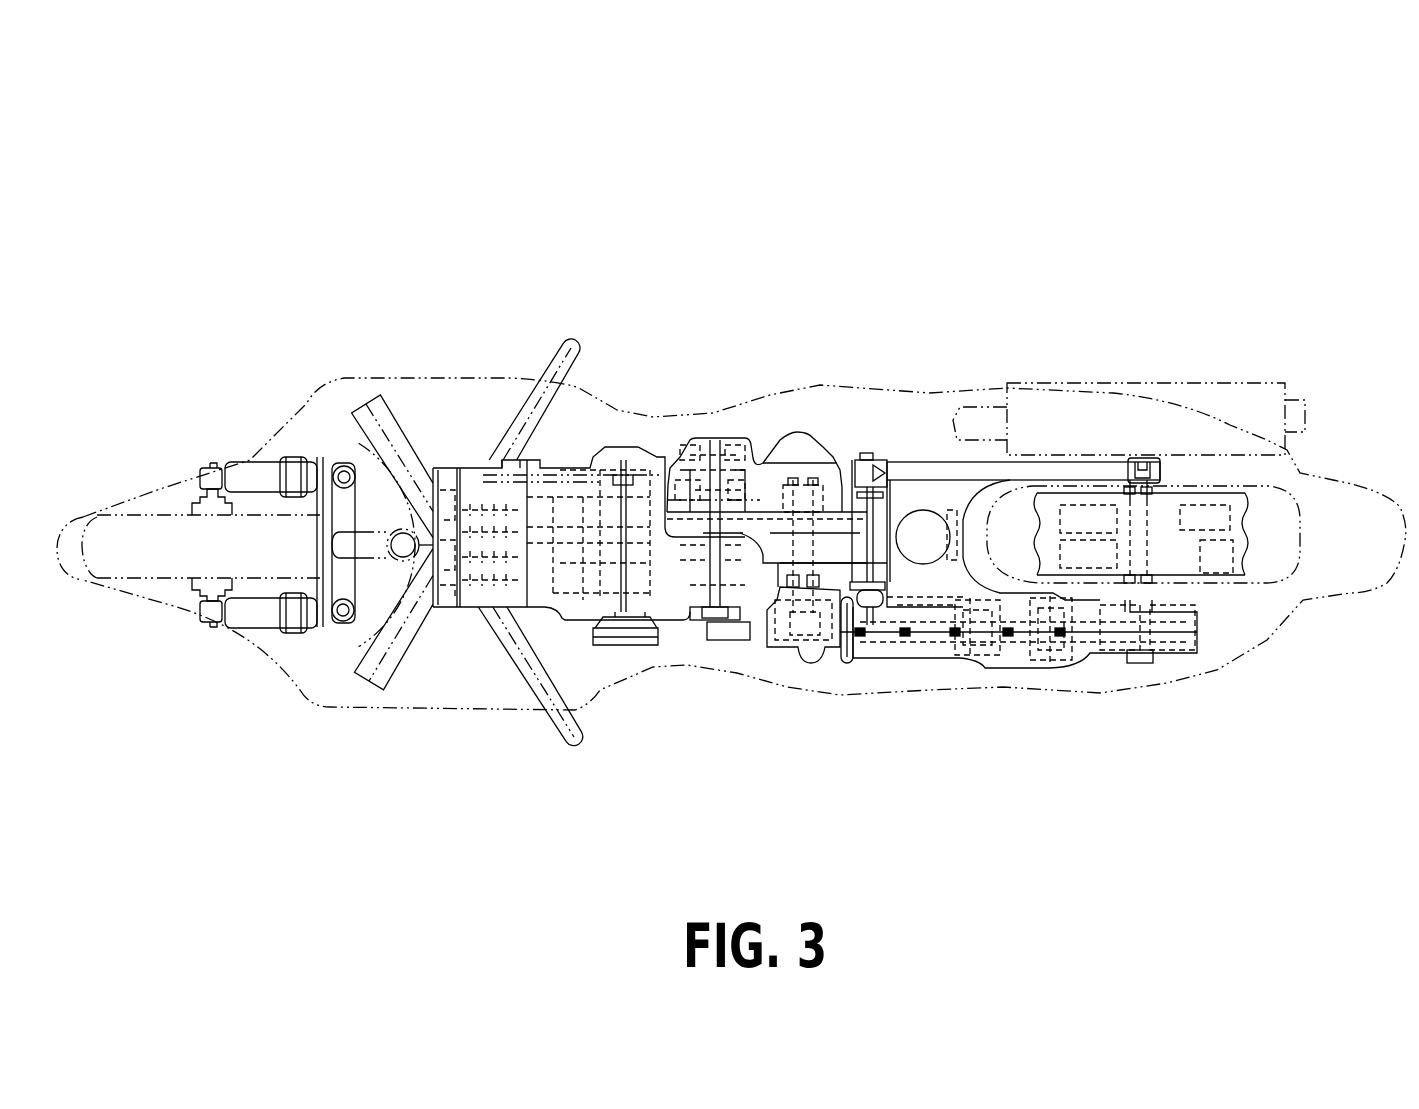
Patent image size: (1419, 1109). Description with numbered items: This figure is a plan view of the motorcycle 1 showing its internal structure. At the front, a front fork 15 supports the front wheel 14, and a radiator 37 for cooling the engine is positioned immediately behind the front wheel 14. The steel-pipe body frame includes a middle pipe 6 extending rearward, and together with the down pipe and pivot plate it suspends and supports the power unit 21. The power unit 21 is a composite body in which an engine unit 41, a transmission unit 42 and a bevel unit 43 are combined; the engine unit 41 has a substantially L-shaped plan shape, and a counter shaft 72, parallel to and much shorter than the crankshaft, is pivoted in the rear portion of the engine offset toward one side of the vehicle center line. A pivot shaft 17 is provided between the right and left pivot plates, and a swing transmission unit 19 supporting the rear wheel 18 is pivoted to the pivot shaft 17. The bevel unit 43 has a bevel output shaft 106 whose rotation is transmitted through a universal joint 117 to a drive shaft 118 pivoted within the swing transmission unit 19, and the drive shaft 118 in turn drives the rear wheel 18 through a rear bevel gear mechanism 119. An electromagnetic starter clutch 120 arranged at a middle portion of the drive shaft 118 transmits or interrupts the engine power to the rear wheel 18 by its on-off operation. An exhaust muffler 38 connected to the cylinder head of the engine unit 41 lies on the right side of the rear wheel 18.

The motorcycle 1 is at (719, 229).
The middle pipe 6 is at (560, 350).
The front wheel 14 is at (160, 513).
The front fork 15 is at (243, 470).
The pivot shaft 17 is at (867, 453).
The rear wheel 18 is at (1295, 517).
The swing transmission unit 19 is at (929, 672).
The power unit 21 is at (667, 437).
The radiator 37 is at (400, 665).
The exhaust muffler 38 is at (1207, 380).
The engine unit 41 is at (549, 629).
The transmission unit 42 is at (784, 426).
The bevel unit 43 is at (784, 669).
The counter shaft 72 is at (700, 642).
The bevel output shaft 106 is at (838, 668).
The universal joint 117 is at (868, 660).
The drive shaft 118 is at (947, 640).
The rear bevel gear mechanism 119 is at (1171, 638).
The starter clutch 120 is at (1064, 670).